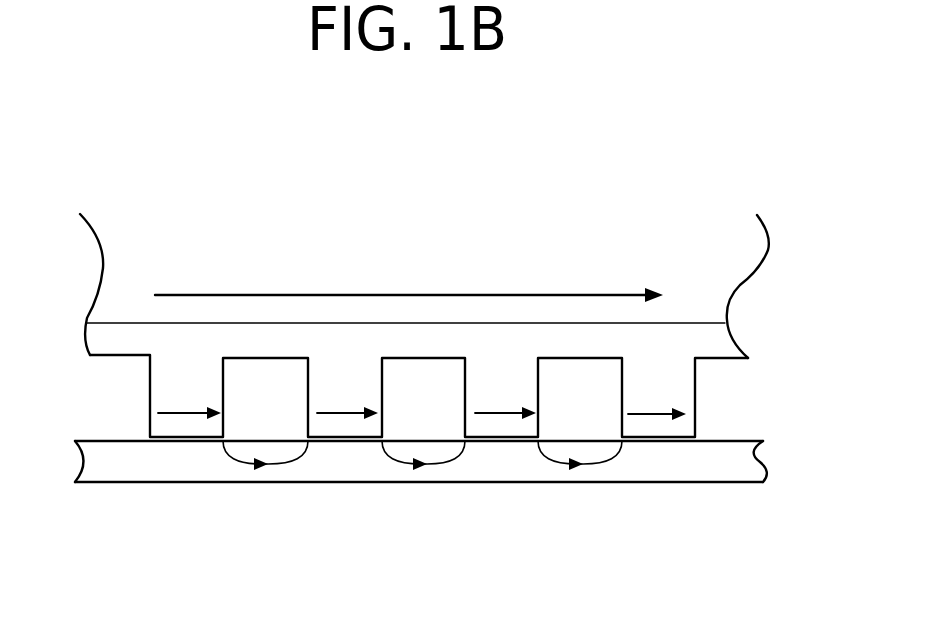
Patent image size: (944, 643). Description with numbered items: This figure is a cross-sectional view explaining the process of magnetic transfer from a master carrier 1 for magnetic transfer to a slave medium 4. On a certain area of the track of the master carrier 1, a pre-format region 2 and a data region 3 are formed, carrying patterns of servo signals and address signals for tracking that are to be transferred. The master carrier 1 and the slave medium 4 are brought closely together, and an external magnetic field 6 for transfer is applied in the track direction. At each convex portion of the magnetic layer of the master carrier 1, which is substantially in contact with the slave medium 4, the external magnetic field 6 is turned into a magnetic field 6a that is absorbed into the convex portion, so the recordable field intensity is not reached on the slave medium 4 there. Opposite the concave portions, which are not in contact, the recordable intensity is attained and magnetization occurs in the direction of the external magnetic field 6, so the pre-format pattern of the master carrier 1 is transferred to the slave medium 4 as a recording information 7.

The master carrier for magnetic transfer 1 is at (157, 212).
The pre-format region 2 is at (708, 345).
The data region 3 is at (677, 387).
The slave medium 4 is at (745, 468).
The external magnetic field for transfer 6 is at (403, 295).
The magnetic field absorbed to the convex portion 6a is at (505, 418).
The recording information 7 is at (287, 468).